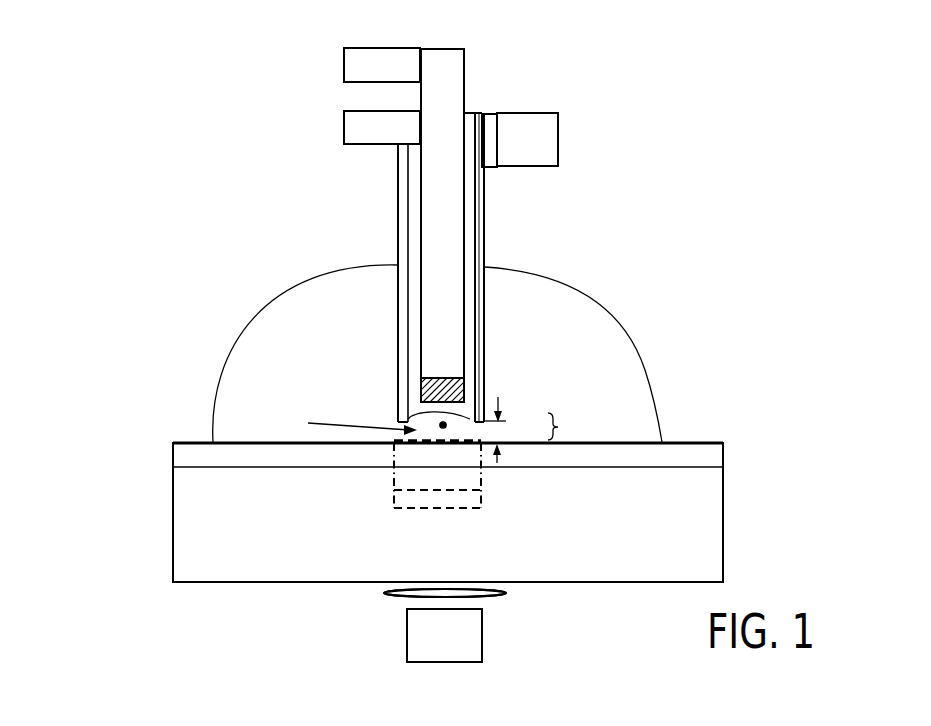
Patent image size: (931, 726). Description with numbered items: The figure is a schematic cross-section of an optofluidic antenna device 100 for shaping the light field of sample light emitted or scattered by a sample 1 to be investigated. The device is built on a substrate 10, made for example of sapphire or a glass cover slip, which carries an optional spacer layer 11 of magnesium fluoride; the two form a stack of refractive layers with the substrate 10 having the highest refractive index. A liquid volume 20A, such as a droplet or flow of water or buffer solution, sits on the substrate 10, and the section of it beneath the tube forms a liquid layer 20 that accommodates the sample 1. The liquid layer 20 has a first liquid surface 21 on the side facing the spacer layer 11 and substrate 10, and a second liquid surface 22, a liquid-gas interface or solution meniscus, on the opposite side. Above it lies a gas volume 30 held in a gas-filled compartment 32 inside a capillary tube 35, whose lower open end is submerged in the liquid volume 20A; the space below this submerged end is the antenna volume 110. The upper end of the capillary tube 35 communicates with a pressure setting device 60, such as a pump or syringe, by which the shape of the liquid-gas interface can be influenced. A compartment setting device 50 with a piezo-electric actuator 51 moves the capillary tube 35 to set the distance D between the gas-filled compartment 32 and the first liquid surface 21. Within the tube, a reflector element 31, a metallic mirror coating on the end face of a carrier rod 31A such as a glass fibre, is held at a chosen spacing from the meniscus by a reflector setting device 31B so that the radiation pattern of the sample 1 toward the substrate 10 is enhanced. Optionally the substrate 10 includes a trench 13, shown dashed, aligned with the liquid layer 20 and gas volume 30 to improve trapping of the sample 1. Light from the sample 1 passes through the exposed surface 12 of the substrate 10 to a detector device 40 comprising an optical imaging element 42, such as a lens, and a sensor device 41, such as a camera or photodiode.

The optofluidic antenna device 100 is at (239, 159).
The substrate 10 is at (188, 553).
The spacer layer 11 is at (188, 453).
The exposed surface 12 is at (268, 582).
The trench 13 is at (427, 481).
The sample 1 is at (444, 426).
The liquid layer 20 is at (573, 425).
The liquid volume 20A is at (337, 290).
The first liquid surface 21 is at (420, 444).
The second liquid surface 22 is at (430, 414).
The gas volume 30 is at (430, 412).
The reflector element 31 is at (445, 393).
The carrier rod 31A is at (452, 76).
The reflector setting device 31B is at (362, 63).
The gas-filled compartment 32 is at (408, 358).
The capillary tube 35 is at (484, 213).
The detector device 40 is at (529, 638).
The sensor device 41 is at (422, 630).
The optical imaging element 42 is at (393, 593).
The compartment setting device 50 is at (543, 145).
The piezo-electric actuator 51 is at (492, 132).
The pressure setting device 60 is at (360, 137).
The antenna volume 110 is at (338, 422).
The distance D is at (506, 424).